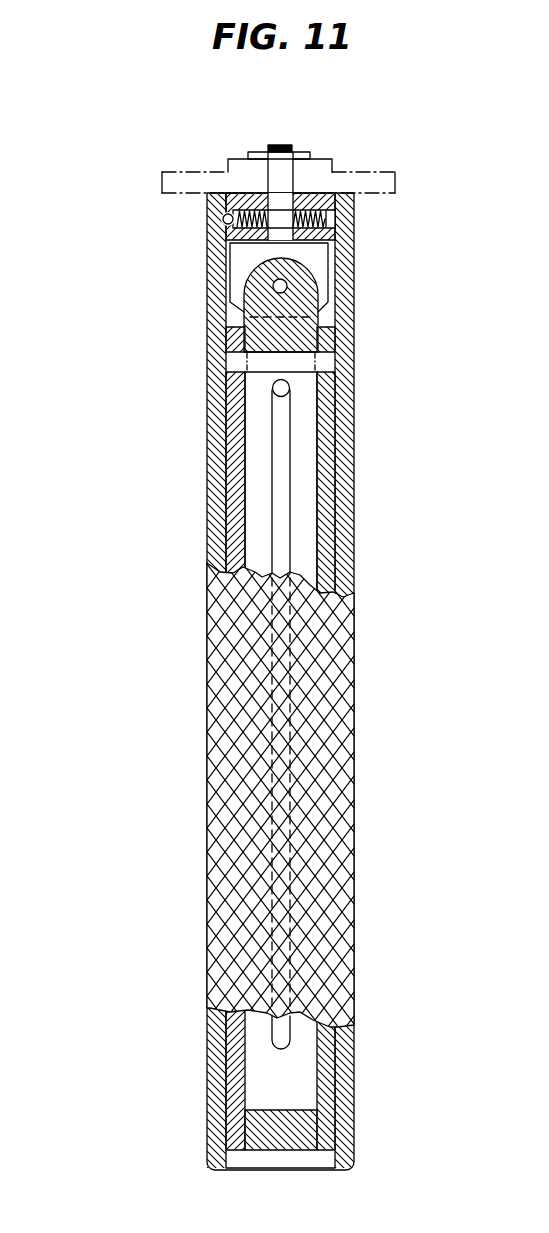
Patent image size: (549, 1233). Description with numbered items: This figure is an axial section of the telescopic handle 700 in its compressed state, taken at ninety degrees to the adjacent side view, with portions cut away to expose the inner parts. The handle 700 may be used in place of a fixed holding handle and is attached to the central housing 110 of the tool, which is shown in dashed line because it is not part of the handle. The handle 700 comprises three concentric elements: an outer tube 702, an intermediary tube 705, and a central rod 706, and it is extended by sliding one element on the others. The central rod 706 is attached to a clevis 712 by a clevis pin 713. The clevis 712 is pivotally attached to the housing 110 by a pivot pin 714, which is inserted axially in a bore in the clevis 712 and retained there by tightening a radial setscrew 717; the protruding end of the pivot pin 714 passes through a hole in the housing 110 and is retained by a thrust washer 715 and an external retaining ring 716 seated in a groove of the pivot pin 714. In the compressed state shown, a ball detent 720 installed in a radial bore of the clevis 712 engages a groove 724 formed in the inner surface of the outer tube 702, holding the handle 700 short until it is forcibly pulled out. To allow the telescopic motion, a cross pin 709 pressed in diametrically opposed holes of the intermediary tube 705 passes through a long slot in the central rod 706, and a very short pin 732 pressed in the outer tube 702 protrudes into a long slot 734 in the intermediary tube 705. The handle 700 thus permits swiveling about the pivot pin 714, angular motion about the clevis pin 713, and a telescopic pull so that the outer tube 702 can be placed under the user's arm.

The central housing 110 is at (175, 177).
The telescopic handle 700 is at (426, 106).
The outer tube 702 is at (223, 992).
The intermediary tube 705 is at (235, 530).
The central rod 706 is at (258, 413).
The cross pin 709 is at (307, 363).
The clevis 712 is at (321, 264).
The clevis pin 713 is at (281, 288).
The pivot pin 714 is at (278, 200).
The thrust washer 715 is at (322, 162).
The external retaining ring 716 is at (253, 156).
The radial setscrew 717 is at (336, 221).
The ball detent 720 is at (222, 220).
The groove 724 is at (226, 230).
The pin 732 is at (288, 390).
The long slot 734 is at (281, 483).